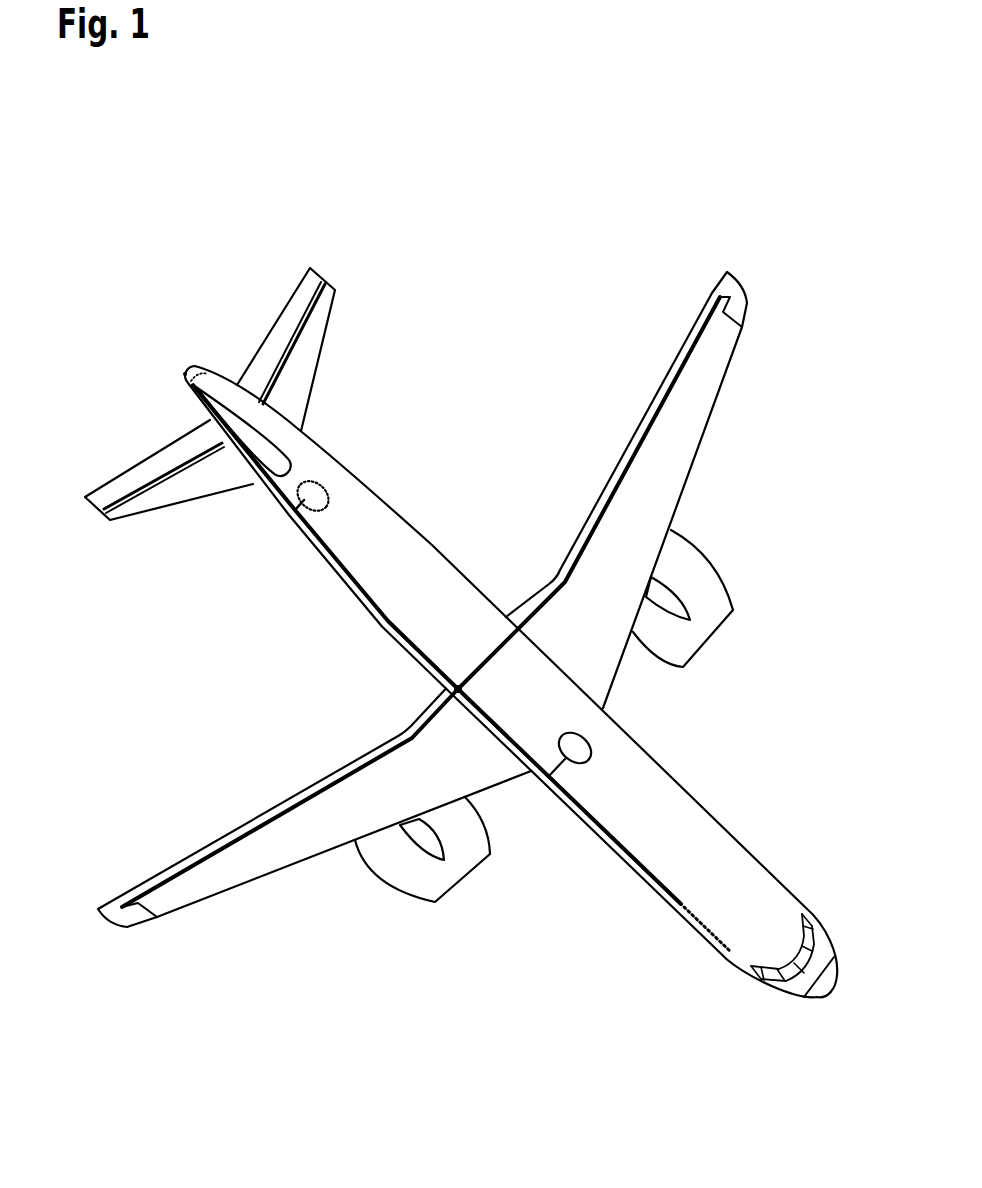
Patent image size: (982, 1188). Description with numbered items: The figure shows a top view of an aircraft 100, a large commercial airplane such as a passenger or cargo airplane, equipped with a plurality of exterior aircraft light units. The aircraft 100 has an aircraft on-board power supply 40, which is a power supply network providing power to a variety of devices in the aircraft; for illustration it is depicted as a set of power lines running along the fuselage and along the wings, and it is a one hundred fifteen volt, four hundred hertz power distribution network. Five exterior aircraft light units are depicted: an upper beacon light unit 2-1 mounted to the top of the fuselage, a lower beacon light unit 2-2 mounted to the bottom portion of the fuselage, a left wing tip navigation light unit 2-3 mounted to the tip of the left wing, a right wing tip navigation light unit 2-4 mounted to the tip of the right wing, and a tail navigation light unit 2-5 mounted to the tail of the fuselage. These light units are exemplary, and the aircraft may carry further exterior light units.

The aircraft 100 is at (487, 430).
The aircraft on-board power supply 40 is at (388, 622).
The upper beacon light unit 2-1 is at (593, 758).
The lower beacon light unit 2-2 is at (322, 485).
The left wing tip navigation light unit 2-3 is at (737, 302).
The right wing tip navigation light unit 2-4 is at (131, 919).
The tail navigation light unit 2-5 is at (185, 373).